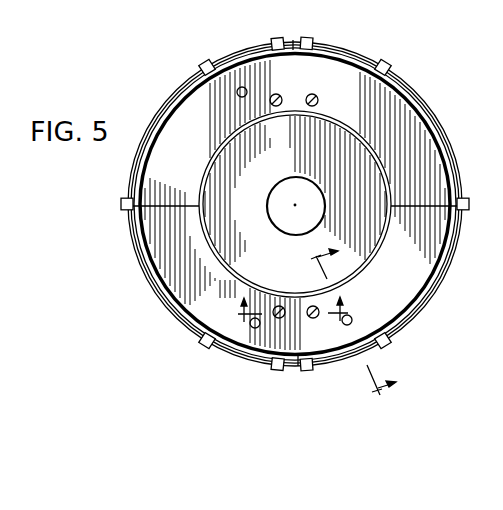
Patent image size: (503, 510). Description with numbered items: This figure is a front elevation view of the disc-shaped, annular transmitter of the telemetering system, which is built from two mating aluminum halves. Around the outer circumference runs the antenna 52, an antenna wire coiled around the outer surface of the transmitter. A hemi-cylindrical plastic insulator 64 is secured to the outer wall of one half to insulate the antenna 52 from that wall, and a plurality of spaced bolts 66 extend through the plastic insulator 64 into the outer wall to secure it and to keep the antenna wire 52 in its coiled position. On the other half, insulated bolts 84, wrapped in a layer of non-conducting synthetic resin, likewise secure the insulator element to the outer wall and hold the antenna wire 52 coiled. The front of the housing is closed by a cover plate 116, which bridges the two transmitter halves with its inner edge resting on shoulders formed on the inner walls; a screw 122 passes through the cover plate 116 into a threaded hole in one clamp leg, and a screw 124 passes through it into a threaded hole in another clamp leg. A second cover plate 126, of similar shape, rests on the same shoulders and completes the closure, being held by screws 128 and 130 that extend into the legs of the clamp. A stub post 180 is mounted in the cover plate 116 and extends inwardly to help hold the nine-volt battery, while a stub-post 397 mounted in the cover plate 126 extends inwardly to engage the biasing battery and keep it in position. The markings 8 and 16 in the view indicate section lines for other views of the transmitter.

The section line 8- 8 is at (360, 315).
The section line 16- 16 is at (297, 305).
The antenna 52 is at (162, 110).
The hemi-cylindrical plastic insulator 64 is at (146, 272).
The bolts 66 is at (283, 32).
The insulated bolts 84 is at (311, 34).
The cover plate 116 is at (428, 137).
The screw 122 is at (289, 84).
The screw 124 is at (319, 100).
The second cover plate 126 is at (422, 285).
The screw 128 is at (282, 318).
The screw 130 is at (316, 318).
The stub post 180 is at (237, 93).
The stub-post 397 is at (250, 324).